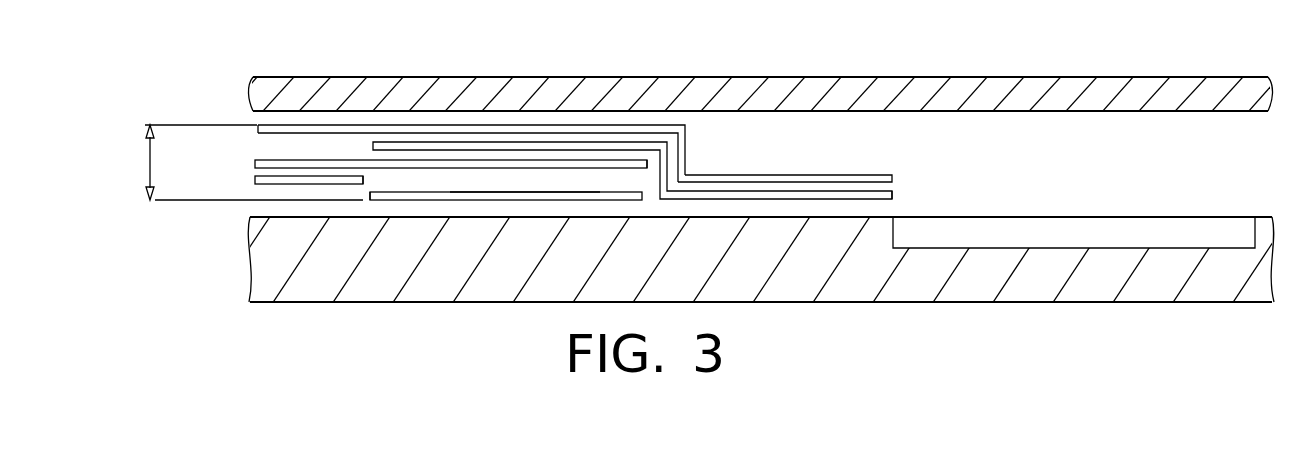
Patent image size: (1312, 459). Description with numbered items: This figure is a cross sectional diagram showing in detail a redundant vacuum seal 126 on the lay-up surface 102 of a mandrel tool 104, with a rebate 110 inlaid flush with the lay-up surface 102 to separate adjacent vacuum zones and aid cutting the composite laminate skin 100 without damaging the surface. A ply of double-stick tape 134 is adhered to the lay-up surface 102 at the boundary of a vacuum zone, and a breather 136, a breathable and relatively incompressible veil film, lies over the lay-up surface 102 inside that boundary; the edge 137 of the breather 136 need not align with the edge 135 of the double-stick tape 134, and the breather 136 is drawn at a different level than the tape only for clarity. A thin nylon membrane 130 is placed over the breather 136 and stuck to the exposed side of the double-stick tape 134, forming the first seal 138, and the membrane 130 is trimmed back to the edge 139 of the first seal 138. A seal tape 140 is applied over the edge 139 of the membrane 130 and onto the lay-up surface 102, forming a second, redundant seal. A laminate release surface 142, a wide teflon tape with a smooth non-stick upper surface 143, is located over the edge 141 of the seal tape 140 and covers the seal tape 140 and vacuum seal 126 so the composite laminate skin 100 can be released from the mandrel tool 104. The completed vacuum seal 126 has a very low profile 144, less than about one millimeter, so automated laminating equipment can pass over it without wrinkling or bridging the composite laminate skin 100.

The composite laminate skin 100 is at (893, 77).
The lay-up surface 102 is at (1265, 216).
The mandrel tool 104 is at (1220, 285).
The rebate 110 is at (1160, 228).
The vacuum seal 126 is at (709, 59).
The membrane 130 is at (258, 162).
The double-stick tape 134 is at (545, 201).
The edge of double-stick tape 135 is at (372, 201).
The breather 136 is at (277, 185).
The edge of breather 137 is at (360, 186).
The first seal 138 is at (590, 192).
The edge of membrane 139 is at (646, 168).
The seal tape 140 is at (893, 188).
The edge of seal tape 141 is at (893, 198).
The laminate release surface 142 is at (618, 153).
The upper surface 143 is at (795, 175).
The low profile 144 is at (150, 164).